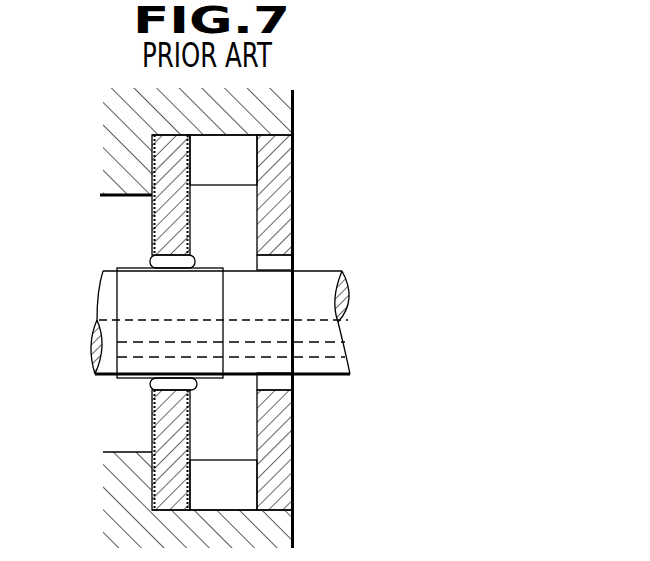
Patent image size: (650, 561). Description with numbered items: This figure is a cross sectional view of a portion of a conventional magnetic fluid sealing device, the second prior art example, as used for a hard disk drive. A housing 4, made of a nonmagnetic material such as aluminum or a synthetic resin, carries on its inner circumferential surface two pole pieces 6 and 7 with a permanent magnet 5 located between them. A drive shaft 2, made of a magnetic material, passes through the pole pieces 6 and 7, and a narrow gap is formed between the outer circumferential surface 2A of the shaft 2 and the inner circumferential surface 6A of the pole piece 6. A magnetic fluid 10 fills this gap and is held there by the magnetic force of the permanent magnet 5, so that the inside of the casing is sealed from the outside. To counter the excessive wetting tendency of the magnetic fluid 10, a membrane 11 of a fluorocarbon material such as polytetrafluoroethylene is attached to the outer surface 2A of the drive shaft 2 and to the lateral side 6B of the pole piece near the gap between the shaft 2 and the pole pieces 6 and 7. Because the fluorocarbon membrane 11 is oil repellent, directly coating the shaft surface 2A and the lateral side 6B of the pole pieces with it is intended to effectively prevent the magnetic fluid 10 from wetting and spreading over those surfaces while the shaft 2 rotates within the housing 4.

The drive shaft 2 is at (110, 288).
The outer circumferential surface of the shaft 2A is at (116, 268).
The housing 4 is at (287, 106).
The permanent magnet 5 is at (248, 143).
The pole piece 6 is at (167, 482).
The inner circumferential surface of the pole piece 6A is at (178, 387).
The lateral side of the pole piece 6B is at (152, 447).
The pole piece 7 is at (280, 493).
The magnetic fluid 10 is at (196, 257).
The membrane 11 is at (151, 217).